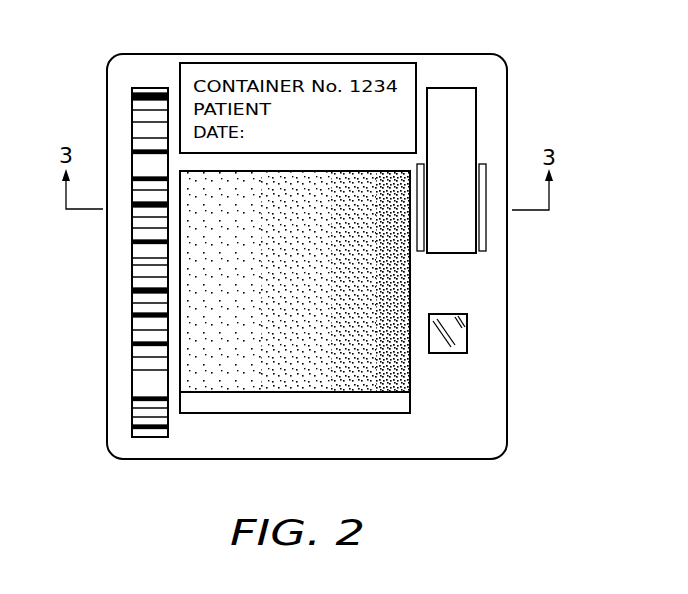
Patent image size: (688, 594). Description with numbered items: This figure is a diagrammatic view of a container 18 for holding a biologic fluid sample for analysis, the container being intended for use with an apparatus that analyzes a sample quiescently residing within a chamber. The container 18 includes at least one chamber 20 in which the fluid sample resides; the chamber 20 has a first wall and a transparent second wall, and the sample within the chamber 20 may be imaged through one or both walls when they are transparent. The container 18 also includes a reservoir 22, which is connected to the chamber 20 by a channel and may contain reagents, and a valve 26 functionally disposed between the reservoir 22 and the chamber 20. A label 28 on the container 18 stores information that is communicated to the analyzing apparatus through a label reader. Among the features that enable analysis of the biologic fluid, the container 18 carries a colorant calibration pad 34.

The container 18 is at (545, 76).
The chamber 20 is at (290, 383).
The reservoir 22 is at (470, 130).
The valve 26 is at (421, 257).
The label 28 is at (135, 247).
The colorant calibration pad 34 is at (462, 334).